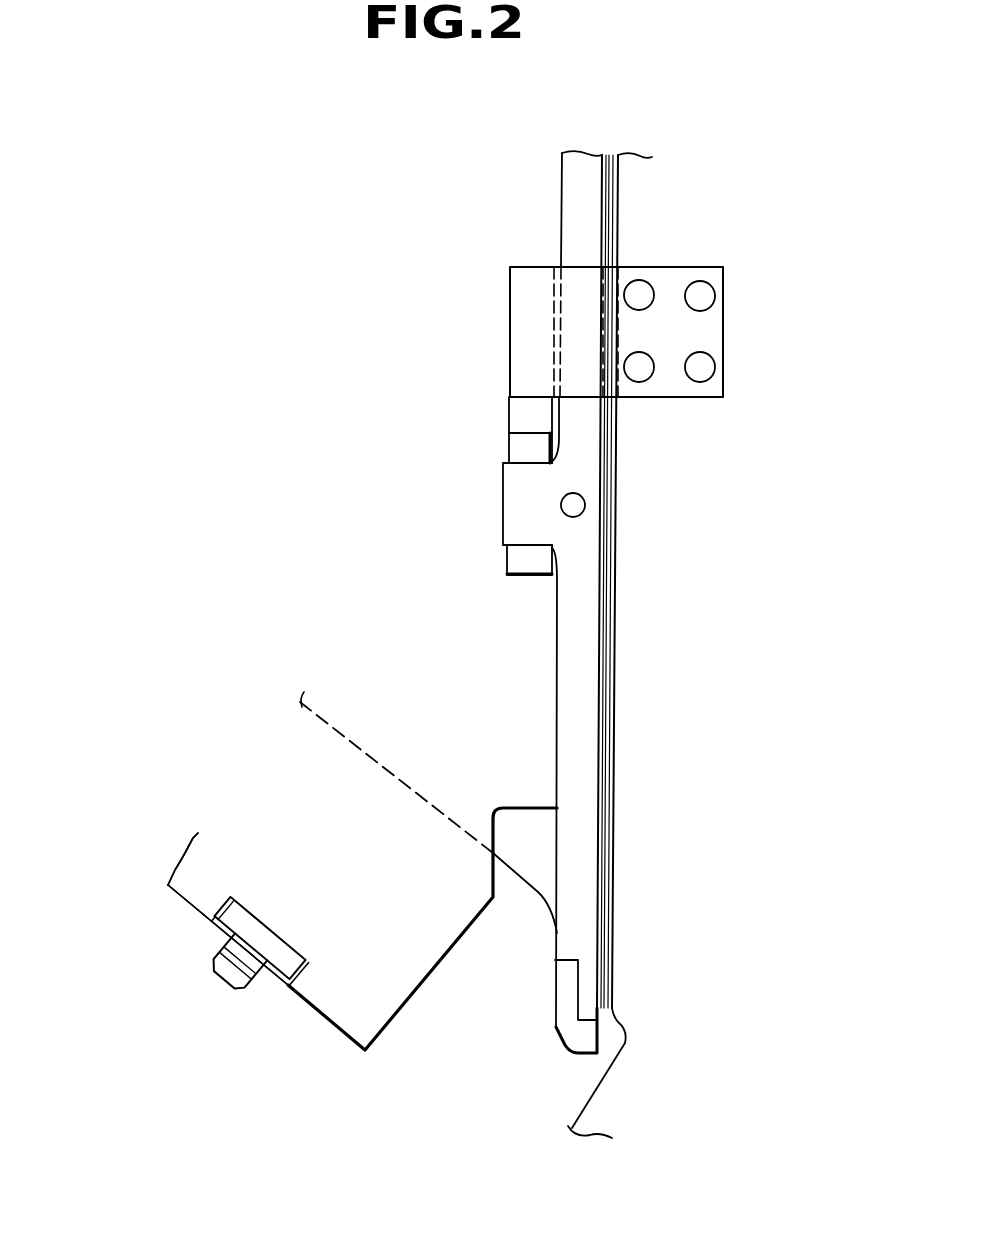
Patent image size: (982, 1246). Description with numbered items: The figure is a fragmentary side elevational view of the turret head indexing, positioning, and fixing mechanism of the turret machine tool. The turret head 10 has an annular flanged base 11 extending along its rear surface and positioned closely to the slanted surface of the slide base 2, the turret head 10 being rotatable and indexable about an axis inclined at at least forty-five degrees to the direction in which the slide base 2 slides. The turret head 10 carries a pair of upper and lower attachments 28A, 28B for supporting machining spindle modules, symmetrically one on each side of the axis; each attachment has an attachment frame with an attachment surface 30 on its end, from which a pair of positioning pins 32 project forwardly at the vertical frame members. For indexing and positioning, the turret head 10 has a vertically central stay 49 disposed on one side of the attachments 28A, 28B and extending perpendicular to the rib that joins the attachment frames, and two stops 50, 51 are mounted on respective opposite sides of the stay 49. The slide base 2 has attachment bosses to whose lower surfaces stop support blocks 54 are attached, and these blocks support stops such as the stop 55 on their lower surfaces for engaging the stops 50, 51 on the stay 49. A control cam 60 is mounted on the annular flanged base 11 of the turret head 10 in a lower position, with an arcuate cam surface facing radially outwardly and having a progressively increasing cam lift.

The slide base 2 is at (675, 186).
The turret head 10 is at (580, 188).
The annular flanged base 11 is at (593, 163).
The stop support block 54 is at (522, 310).
The stop 55 is at (520, 413).
The stop 50 is at (538, 448).
The vertically central stay 49 is at (518, 498).
The stop 51 is at (526, 568).
The upper attachment 28A is at (252, 779).
The lower attachment 28B is at (252, 779).
The attachment surface 30 is at (332, 1027).
The positioning pin 32 is at (222, 988).
The control cam 60 is at (570, 1030).